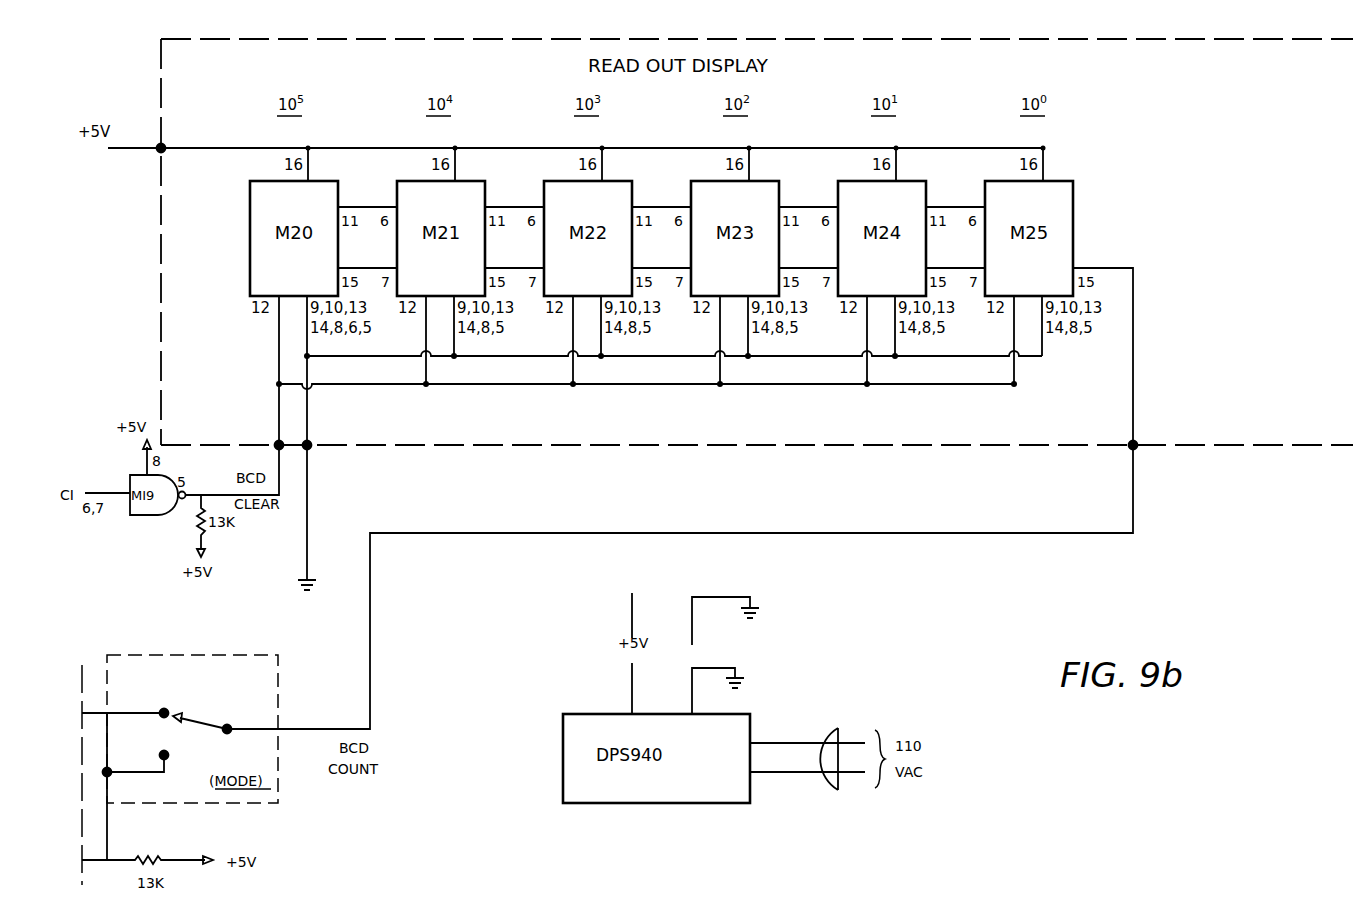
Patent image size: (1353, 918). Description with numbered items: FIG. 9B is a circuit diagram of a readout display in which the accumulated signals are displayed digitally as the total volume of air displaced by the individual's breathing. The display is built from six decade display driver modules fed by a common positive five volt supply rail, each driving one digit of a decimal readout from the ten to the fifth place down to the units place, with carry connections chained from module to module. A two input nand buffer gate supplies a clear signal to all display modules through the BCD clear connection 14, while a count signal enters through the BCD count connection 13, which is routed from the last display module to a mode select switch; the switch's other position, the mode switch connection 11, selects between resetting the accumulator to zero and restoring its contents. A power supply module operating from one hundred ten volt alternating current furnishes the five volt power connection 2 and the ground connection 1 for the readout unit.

The BCD clear connection 14 is at (235, 397).
The BCD count connection 13 is at (701, 501).
The mode switch connection 11 is at (154, 770).
The +5V power connection 2 is at (618, 603).
The ground connection 1 is at (724, 621).